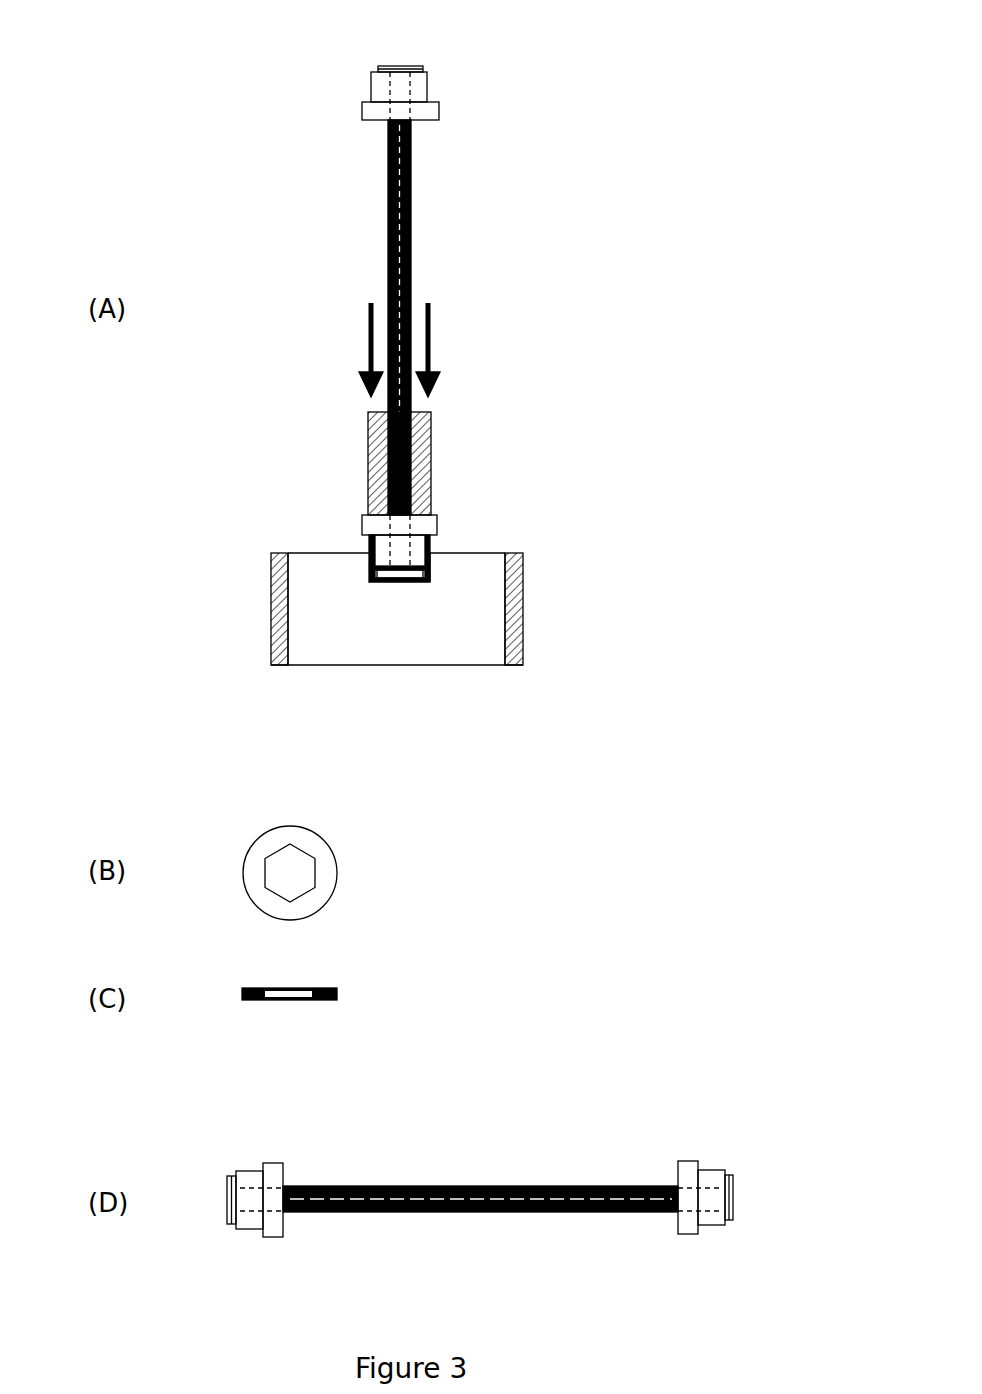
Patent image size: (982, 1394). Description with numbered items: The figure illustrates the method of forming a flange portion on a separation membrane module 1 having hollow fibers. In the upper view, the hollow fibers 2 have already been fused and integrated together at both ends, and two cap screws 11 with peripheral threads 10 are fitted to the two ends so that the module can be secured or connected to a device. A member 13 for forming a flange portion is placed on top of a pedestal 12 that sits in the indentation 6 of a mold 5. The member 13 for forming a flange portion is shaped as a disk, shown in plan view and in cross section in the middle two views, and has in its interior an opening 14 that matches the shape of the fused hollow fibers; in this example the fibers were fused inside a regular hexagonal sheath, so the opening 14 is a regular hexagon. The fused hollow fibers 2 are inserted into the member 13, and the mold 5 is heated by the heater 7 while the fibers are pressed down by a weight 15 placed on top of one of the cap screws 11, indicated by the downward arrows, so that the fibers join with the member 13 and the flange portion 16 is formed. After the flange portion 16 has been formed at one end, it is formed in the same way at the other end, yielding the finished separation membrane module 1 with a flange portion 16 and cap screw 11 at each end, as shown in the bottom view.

The connecting assembly 1 is at (204, 53).
The hollow fibers 2 is at (377, 224).
The mold 5 is at (318, 610).
The indentation 6 is at (437, 567).
The heater 7 is at (522, 612).
The peripheral threads 10 is at (373, 92).
The cap screws 11 is at (418, 98).
The pedestal 12 is at (402, 574).
The member for forming a flange portion 13 is at (373, 556).
The opening 14 is at (282, 871).
The weight 15 is at (427, 460).
The flange portion 16 is at (393, 68).